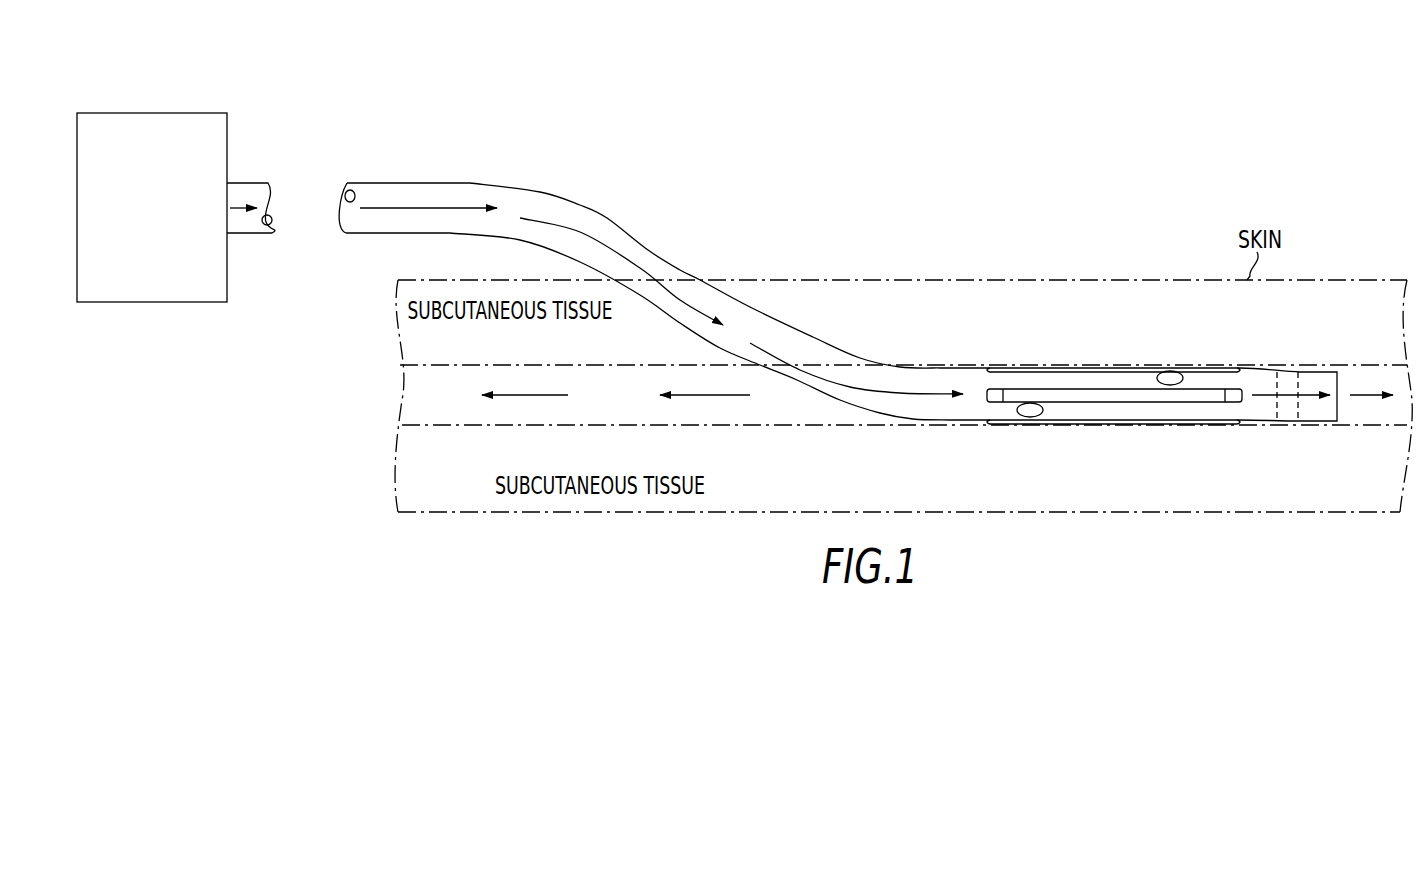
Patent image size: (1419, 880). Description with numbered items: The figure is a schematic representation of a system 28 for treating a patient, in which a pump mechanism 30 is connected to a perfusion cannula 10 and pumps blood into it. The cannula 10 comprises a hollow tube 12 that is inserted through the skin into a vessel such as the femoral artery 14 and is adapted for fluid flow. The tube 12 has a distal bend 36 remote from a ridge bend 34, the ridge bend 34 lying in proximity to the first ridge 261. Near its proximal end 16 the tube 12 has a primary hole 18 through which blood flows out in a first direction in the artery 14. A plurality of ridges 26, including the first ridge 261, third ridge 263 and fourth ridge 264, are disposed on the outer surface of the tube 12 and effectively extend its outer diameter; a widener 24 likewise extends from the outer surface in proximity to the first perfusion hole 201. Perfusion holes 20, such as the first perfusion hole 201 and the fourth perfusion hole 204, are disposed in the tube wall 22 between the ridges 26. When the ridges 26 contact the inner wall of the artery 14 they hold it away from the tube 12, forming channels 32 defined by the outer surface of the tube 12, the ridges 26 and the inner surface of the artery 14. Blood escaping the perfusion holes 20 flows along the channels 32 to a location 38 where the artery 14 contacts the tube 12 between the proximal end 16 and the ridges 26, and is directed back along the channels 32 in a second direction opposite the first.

The perfusion cannula 10 is at (878, 293).
The hollow tube 12 is at (753, 299).
The artery 14 is at (468, 418).
The proximal end 16 is at (1310, 436).
The primary hole 18 is at (1352, 410).
The perfusion holes 20 is at (881, 358).
The tube wall 22 is at (803, 341).
The widener 24 is at (824, 436).
The ridges 26 is at (1084, 436).
The system 28 is at (174, 101).
The pump mechanism 30 is at (138, 262).
The channels 32 is at (963, 380).
The ridge bend 34 is at (776, 398).
The distal bend 36 is at (613, 219).
The location 38 is at (1292, 354).
The first perfusion hole 201 is at (1170, 371).
The fourth perfusion hole 204 is at (1018, 413).
The first ridge 261 is at (1027, 367).
The third ridge 263 is at (1145, 422).
The fourth ridge 264 is at (1070, 398).